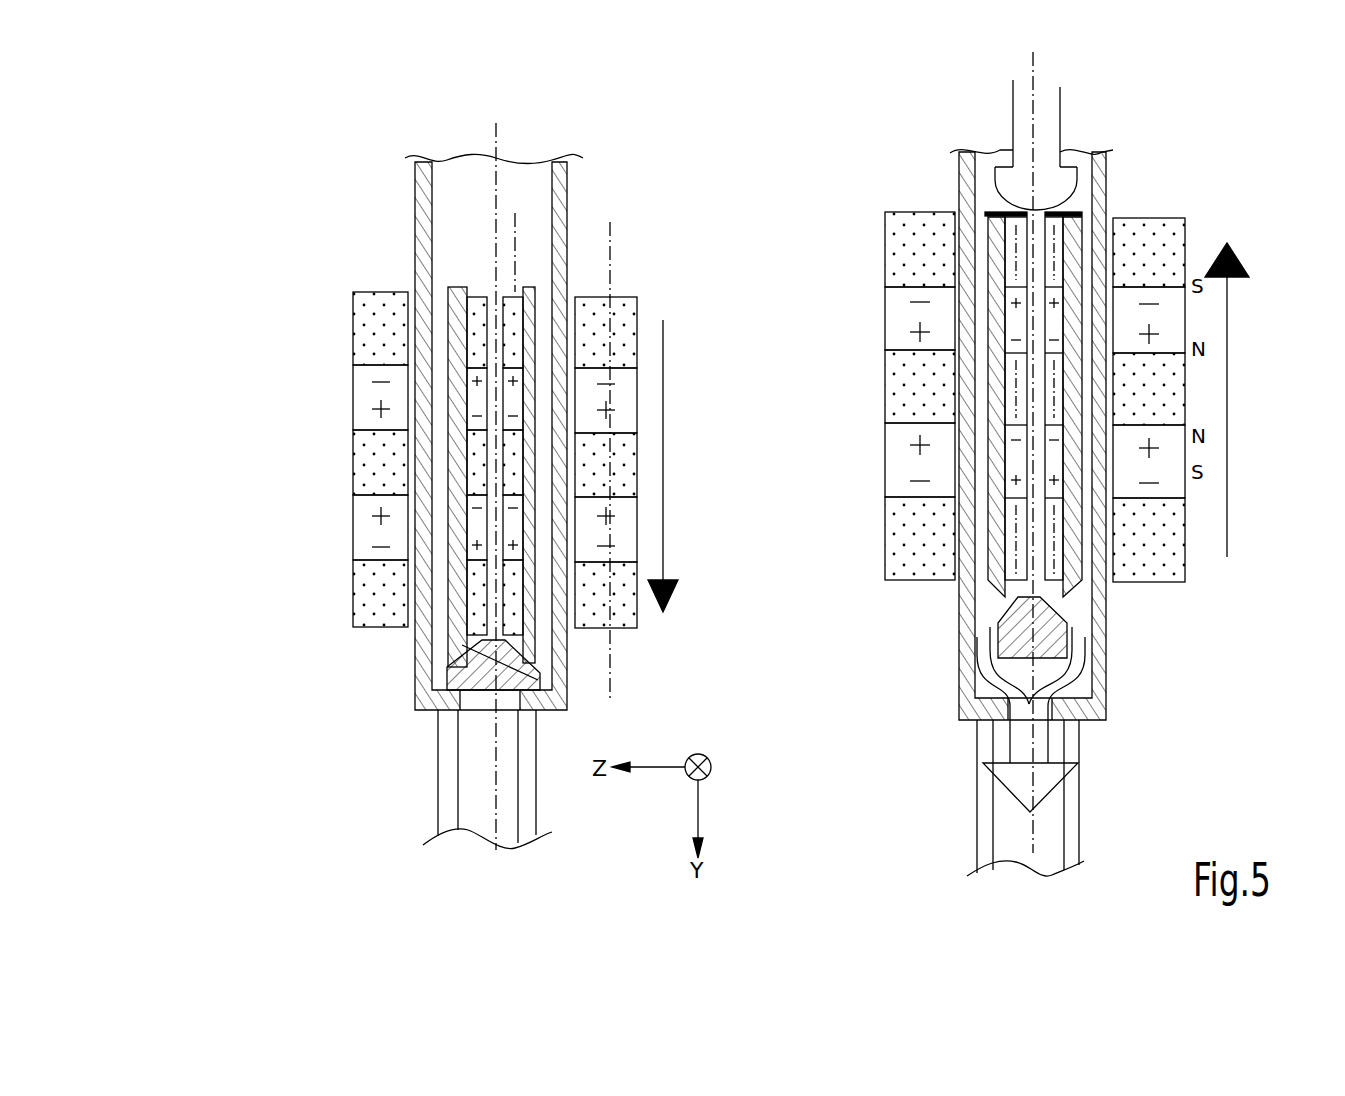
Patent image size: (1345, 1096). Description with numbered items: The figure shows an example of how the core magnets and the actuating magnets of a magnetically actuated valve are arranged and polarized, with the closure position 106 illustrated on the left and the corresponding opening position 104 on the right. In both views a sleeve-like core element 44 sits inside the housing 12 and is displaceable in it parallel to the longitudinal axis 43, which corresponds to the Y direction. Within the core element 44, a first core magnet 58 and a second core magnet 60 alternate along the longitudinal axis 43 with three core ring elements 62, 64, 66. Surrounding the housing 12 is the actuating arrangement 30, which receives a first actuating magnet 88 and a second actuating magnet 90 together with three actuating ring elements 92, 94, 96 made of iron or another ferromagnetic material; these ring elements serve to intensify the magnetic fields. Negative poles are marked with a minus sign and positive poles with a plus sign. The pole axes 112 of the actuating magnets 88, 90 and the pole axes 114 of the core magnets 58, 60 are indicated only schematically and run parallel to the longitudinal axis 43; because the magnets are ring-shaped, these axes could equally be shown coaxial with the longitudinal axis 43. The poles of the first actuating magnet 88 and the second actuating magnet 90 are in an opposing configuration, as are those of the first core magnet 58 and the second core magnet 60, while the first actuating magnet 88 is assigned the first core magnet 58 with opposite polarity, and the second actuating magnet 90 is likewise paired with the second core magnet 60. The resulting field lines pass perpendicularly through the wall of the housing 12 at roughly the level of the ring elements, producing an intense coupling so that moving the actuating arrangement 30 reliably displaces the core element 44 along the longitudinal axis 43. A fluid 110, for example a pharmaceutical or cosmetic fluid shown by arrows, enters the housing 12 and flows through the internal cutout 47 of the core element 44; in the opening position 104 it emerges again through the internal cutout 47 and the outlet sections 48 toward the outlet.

The housing 12 is at (428, 184).
The actuating arrangement 30 is at (556, 442).
The longitudinal axis 43 is at (498, 142).
The core element 44 is at (545, 270).
The internal cutout 47 is at (497, 611).
The outlet section 48 is at (1062, 608).
The first core magnet 58 is at (472, 527).
The second core magnet 60 is at (466, 393).
The core ring element 62 is at (465, 607).
The core ring element 64 is at (473, 465).
The core ring element 66 is at (466, 305).
The first actuating magnet 88 is at (626, 522).
The second actuating magnet 90 is at (628, 406).
The actuating ring element 92 is at (627, 580).
The actuating ring element 94 is at (631, 463).
The actuating ring element 96 is at (634, 342).
The opening position 104 is at (1210, 670).
The closure position 106 is at (372, 749).
The fluid 110 is at (1045, 133).
The pole axes of the actuating magnets 112 is at (611, 226).
The pole axes of the core magnets 114 is at (517, 224).